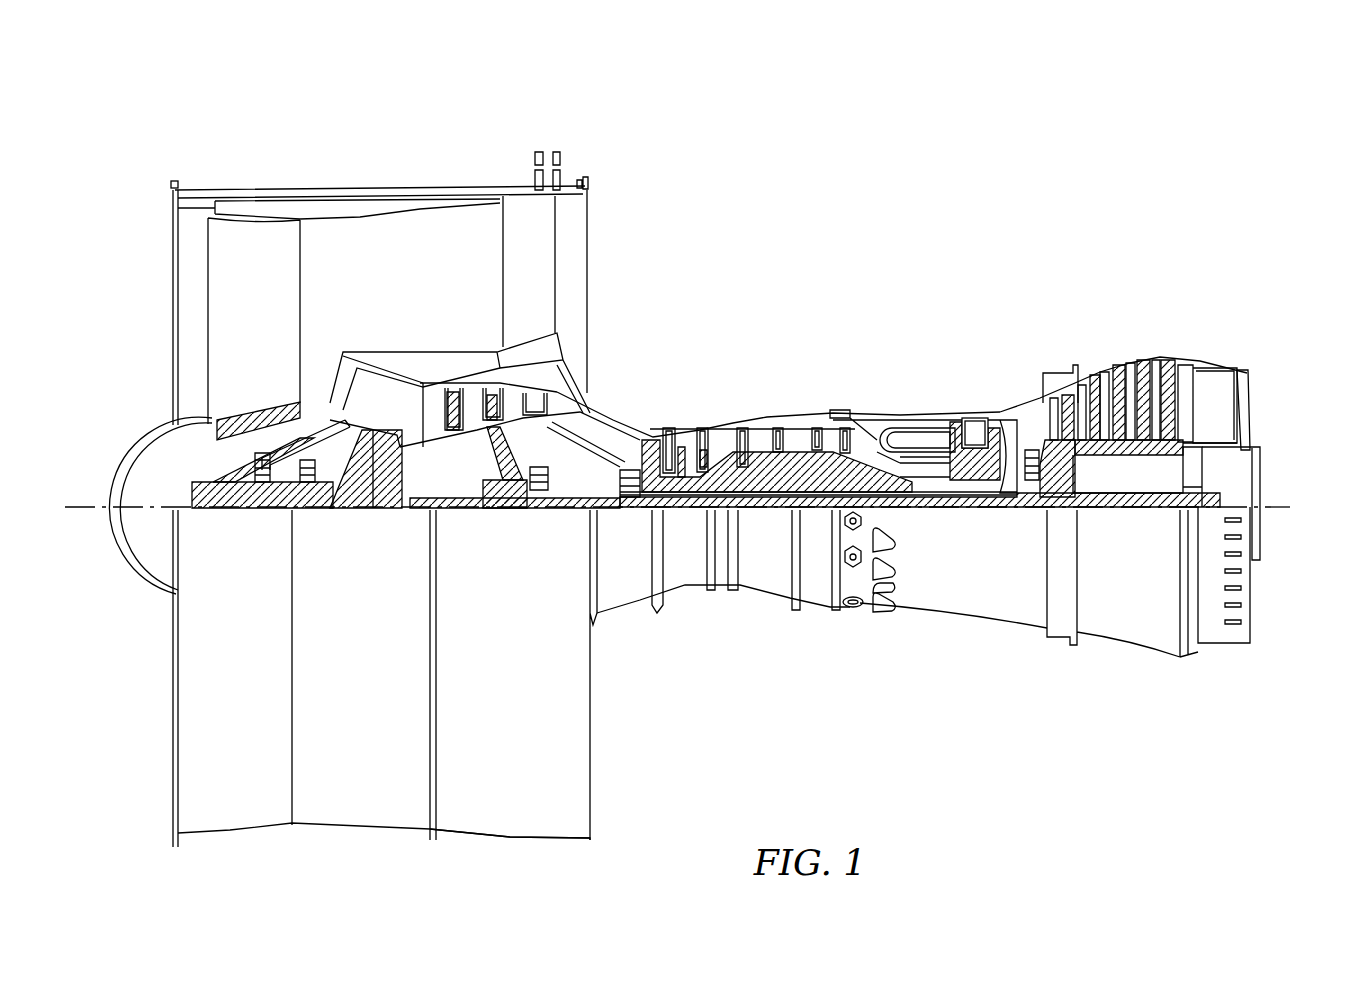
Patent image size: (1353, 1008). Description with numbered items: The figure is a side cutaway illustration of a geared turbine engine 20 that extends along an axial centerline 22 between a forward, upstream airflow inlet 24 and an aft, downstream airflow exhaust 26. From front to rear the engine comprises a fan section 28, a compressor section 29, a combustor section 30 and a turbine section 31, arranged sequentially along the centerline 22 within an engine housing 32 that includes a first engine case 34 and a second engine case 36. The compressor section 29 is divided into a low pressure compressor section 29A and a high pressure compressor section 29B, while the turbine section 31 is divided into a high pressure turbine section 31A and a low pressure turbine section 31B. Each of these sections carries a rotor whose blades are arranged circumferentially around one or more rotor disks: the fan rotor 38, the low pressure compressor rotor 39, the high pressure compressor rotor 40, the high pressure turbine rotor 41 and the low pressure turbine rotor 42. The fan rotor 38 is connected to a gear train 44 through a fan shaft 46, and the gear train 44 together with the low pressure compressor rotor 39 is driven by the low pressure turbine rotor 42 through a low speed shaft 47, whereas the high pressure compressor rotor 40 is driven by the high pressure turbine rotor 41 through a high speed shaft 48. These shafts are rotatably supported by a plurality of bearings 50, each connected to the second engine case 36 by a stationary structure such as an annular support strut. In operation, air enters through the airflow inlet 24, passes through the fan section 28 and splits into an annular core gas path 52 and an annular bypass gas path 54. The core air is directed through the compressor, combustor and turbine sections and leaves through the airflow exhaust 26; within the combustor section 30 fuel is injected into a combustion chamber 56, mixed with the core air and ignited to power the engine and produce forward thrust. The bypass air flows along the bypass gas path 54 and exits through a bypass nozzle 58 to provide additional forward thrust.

The geared turbine engine 20 is at (1102, 152).
The axial centerline 22 is at (1326, 505).
The airflow inlet 24 is at (175, 240).
The airflow exhaust 26 is at (1250, 400).
The fan section 28 is at (343, 165).
The compressor section 29 is at (420, 95).
The low pressure compressor section 29A is at (485, 330).
The high pressure compressor section 29B is at (778, 416).
The combustor section 30 is at (915, 373).
The turbine section 31 is at (945, 255).
The high pressure turbine section 31A is at (983, 415).
The low pressure turbine section 31B is at (1171, 423).
The engine housing 32 is at (605, 636).
The first engine case 34 is at (518, 840).
The second engine case 36 is at (818, 607).
The fan rotor 38 is at (200, 423).
The low pressure compressor rotor 39 is at (497, 450).
The high pressure compressor rotor 40 is at (760, 465).
The high pressure turbine rotor 41 is at (1003, 482).
The low pressure turbine rotor 42 is at (1115, 447).
The gear train 44 is at (380, 508).
The fan shaft 46 is at (215, 510).
The low speed shaft 47 is at (1130, 500).
The high speed shaft 48 is at (905, 497).
The bearings 50 is at (300, 482).
The core gas path 52 is at (614, 419).
The bypass gas path 54 is at (406, 302).
The combustion chamber 56 is at (900, 445).
The bypass nozzle 58 is at (590, 253).